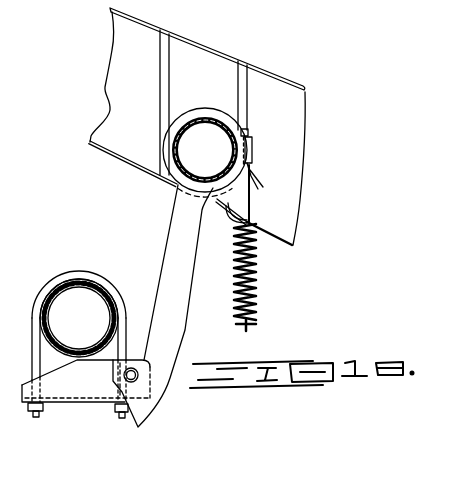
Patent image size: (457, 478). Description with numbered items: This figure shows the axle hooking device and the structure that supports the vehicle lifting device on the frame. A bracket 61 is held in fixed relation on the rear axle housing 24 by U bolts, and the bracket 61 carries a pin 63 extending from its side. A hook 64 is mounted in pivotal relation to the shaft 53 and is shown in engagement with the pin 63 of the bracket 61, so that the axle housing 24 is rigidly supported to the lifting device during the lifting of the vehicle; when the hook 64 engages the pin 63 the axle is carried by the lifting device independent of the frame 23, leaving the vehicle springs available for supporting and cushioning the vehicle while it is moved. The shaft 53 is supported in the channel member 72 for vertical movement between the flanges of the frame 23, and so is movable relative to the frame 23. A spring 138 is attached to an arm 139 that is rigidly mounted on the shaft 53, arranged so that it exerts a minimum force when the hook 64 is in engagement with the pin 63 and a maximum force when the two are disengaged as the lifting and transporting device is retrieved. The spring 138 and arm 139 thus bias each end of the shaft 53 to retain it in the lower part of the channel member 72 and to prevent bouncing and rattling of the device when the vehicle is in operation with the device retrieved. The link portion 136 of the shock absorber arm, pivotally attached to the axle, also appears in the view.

The frame 23 is at (118, 88).
The channel member 72 is at (167, 72).
The shaft 53 is at (207, 118).
The arm 139 is at (257, 190).
The spring 138 is at (254, 279).
The axle housing 24 is at (92, 280).
The link portion 136 is at (2, 326).
The bracket 61 is at (108, 392).
The pin 63 is at (133, 367).
The hook 64 is at (163, 383).